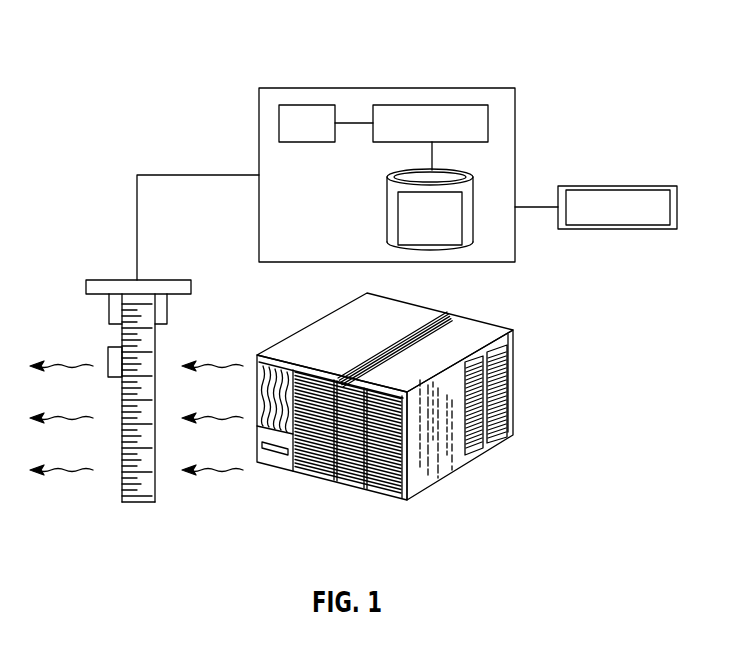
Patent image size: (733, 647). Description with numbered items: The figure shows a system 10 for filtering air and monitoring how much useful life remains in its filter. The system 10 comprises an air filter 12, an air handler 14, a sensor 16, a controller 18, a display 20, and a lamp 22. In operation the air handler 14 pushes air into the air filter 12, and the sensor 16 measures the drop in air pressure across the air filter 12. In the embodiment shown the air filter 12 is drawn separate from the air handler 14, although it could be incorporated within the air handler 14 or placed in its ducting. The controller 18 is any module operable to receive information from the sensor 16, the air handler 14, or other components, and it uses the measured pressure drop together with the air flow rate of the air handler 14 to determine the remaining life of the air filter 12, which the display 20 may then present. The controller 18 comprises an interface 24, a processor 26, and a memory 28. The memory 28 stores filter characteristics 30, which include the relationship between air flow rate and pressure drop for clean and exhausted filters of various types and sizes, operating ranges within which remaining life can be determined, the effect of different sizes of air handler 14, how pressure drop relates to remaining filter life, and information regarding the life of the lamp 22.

The system 10 is at (646, 46).
The air filter 12 is at (137, 502).
The air handler 14 is at (493, 333).
The sensor 16 is at (117, 280).
The controller 18 is at (473, 88).
The display 20 is at (632, 186).
The lamp 22 is at (108, 355).
The interface 24 is at (308, 104).
The processor 26 is at (432, 104).
The memory 28 is at (474, 178).
The filter characteristics 30 is at (462, 216).